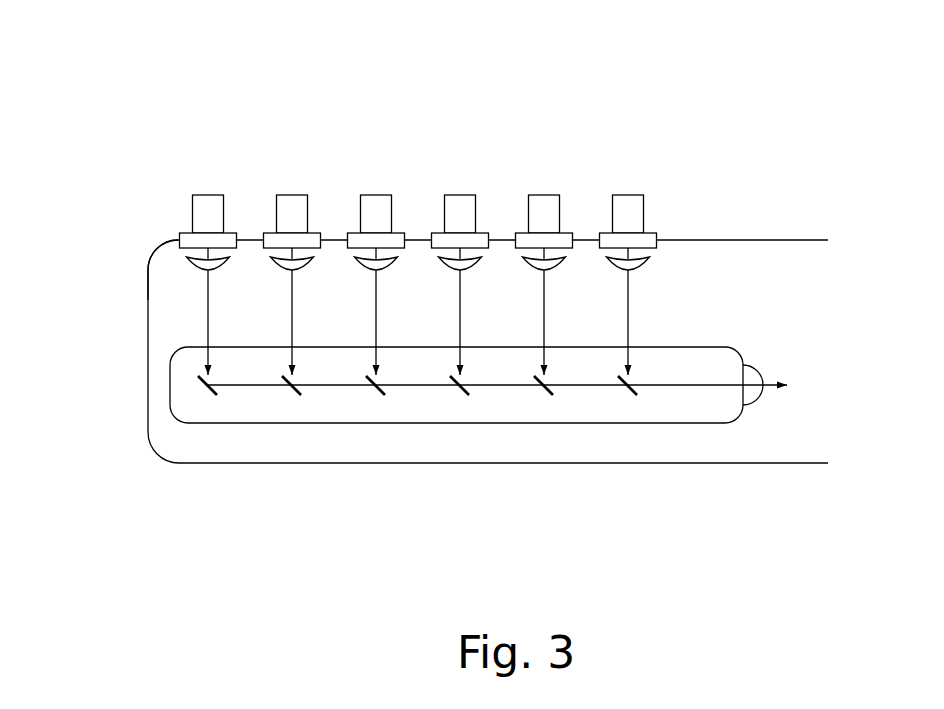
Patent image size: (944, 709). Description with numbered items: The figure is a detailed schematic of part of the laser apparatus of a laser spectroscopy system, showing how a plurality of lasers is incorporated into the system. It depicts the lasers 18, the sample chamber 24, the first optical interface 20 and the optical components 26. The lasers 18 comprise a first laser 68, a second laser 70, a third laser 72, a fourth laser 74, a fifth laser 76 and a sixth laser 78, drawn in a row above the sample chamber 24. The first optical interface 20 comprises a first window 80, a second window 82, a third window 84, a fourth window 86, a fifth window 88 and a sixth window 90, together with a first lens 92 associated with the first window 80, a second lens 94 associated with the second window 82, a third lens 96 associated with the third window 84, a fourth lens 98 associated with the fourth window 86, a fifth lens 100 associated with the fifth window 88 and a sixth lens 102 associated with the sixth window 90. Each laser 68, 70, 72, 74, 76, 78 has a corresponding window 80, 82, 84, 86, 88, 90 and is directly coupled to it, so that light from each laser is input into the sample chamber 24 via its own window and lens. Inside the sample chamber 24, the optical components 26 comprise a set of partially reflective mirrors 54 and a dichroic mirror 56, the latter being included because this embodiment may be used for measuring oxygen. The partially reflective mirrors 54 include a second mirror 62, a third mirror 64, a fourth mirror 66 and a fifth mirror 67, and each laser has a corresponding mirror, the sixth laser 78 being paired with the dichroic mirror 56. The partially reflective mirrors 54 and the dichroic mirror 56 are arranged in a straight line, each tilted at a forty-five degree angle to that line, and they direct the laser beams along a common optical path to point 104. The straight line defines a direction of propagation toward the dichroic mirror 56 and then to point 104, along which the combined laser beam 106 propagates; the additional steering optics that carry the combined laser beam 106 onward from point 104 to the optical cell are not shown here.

The lasers 18 is at (320, 80).
The first optical interface 20 is at (160, 241).
The sample chamber 24 is at (764, 217).
The optical components 26 is at (165, 386).
The partially reflective mirrors 54 is at (507, 530).
The dichroic mirror 56 is at (628, 403).
The second mirror 62 is at (290, 402).
The third mirror 64 is at (373, 400).
The fourth mirror 66 is at (455, 400).
The fifth mirror 67 is at (538, 400).
The first laser 68 is at (205, 183).
The second laser 70 is at (298, 180).
The third laser 72 is at (380, 180).
The fourth laser 74 is at (462, 180).
The fifth laser 76 is at (547, 180).
The sixth laser 78 is at (630, 180).
The first window 80 is at (237, 226).
The second window 82 is at (321, 226).
The third window 84 is at (405, 226).
The fourth window 86 is at (489, 226).
The fifth window 88 is at (573, 226).
The sixth window 90 is at (657, 226).
The first lens 92 is at (233, 265).
The second lens 94 is at (317, 265).
The third lens 96 is at (401, 265).
The fourth lens 98 is at (485, 265).
The fifth lens 100 is at (569, 265).
The sixth lens 102 is at (653, 265).
The point 104 is at (750, 393).
The combined laser beam 106 is at (774, 368).